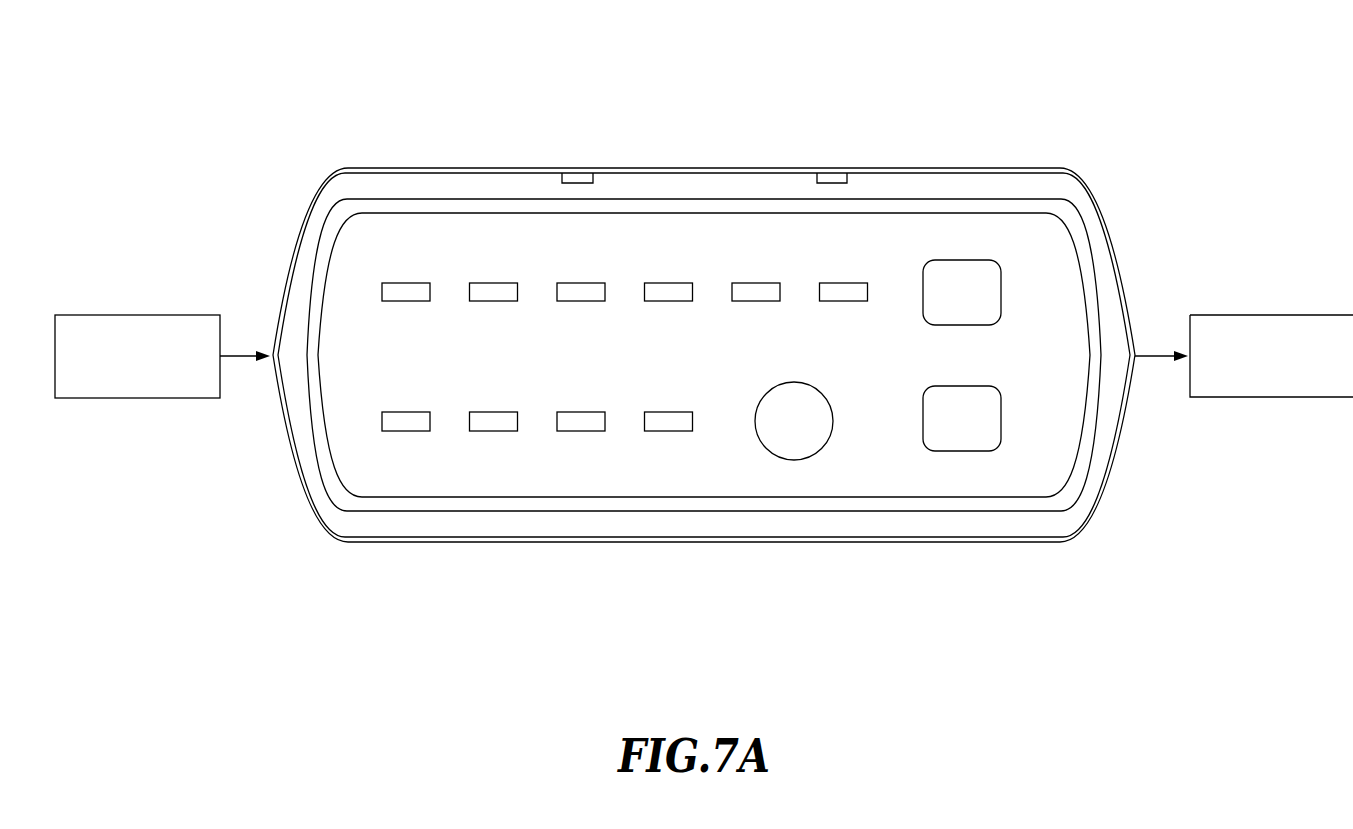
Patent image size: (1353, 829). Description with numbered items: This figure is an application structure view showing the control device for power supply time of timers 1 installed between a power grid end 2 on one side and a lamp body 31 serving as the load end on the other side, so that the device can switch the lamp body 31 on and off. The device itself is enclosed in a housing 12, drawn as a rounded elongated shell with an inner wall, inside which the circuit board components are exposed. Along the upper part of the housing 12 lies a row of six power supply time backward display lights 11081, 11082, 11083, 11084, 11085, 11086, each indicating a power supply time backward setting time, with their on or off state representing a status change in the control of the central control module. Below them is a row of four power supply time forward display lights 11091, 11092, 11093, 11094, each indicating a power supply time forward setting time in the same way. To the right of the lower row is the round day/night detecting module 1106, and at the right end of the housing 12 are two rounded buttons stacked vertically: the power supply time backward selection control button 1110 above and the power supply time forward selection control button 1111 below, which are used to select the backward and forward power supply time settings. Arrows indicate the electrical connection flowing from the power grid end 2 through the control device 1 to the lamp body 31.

The control device for power supply time of timers 1 is at (1017, 108).
The power grid end 2 is at (135, 315).
The housing 12 is at (1088, 216).
The lamp body 31 is at (1271, 315).
The power supply time backward display light 11081 is at (405, 283).
The power supply time backward display light 11082 is at (493, 283).
The power supply time backward display light 11083 is at (580, 283).
The power supply time backward display light 11084 is at (668, 283).
The power supply time backward display light 11085 is at (755, 283).
The power supply time backward display light 11086 is at (843, 283).
The power supply time forward display light 11091 is at (405, 431).
The power supply time forward display light 11092 is at (493, 431).
The power supply time forward display light 11093 is at (580, 431).
The power supply time forward display light 11094 is at (668, 431).
The power supply time backward selection control button 1110 is at (960, 260).
The power supply time forward selection control button 1111 is at (958, 451).
The day/night detecting module 1106 is at (794, 460).